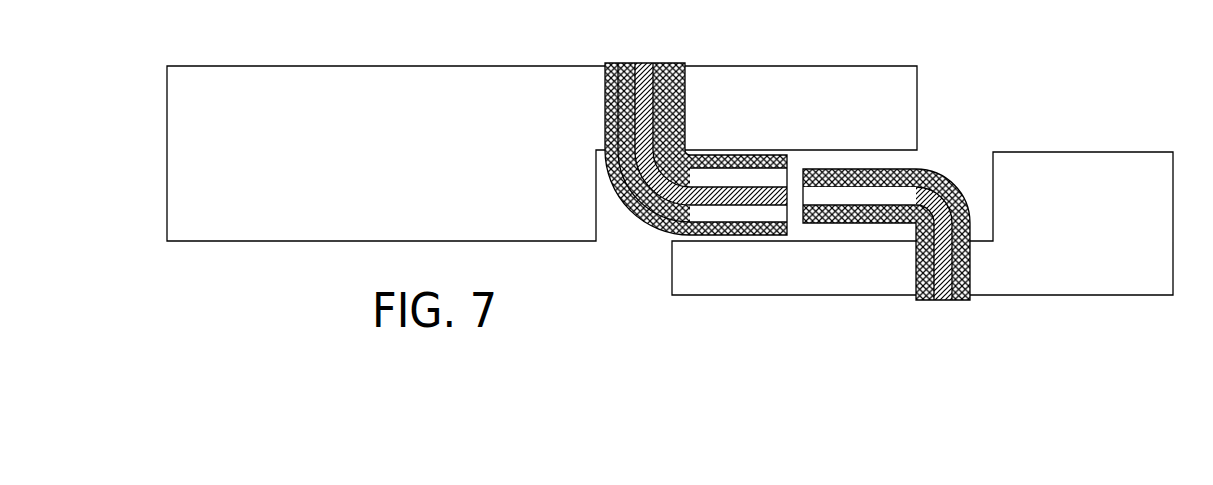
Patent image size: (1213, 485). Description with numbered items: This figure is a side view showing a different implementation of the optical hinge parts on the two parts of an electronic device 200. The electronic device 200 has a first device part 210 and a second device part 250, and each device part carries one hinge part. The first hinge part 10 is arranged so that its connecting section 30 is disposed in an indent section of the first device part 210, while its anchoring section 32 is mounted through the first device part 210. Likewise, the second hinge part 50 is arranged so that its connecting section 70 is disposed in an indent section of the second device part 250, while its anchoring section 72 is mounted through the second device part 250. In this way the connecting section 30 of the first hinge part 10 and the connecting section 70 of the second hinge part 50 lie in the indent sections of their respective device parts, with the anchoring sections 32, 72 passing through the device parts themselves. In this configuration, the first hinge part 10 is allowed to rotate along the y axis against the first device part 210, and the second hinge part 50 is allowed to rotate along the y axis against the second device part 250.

The electronic device 200 is at (670, 152).
The first device part 210 is at (333, 77).
The second device part 250 is at (1052, 160).
The first hinge part 10 is at (690, 171).
The connecting section 30 is at (738, 250).
The anchoring section 32 is at (693, 128).
The second hinge part 50 is at (916, 204).
The connecting section 70 is at (865, 170).
The anchoring section 72 is at (973, 265).